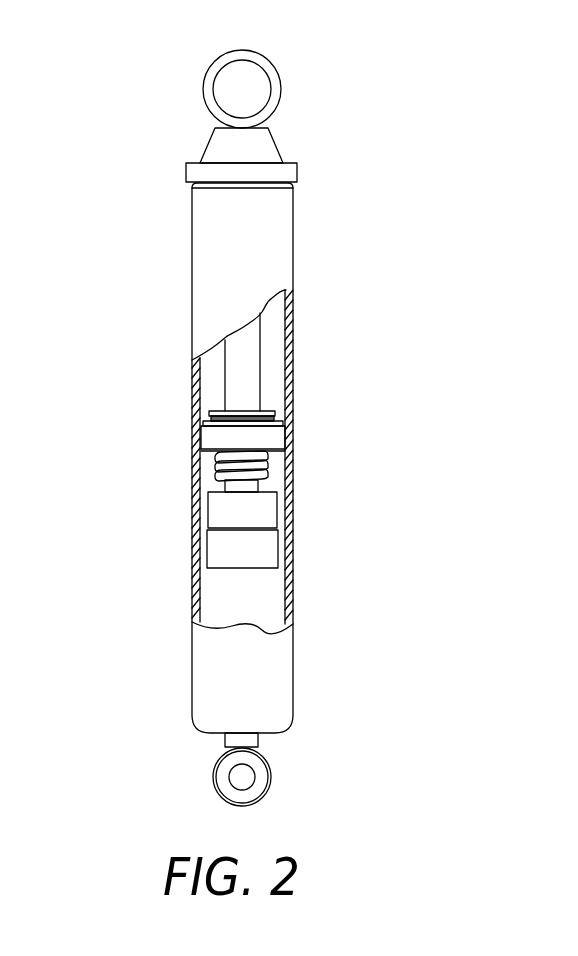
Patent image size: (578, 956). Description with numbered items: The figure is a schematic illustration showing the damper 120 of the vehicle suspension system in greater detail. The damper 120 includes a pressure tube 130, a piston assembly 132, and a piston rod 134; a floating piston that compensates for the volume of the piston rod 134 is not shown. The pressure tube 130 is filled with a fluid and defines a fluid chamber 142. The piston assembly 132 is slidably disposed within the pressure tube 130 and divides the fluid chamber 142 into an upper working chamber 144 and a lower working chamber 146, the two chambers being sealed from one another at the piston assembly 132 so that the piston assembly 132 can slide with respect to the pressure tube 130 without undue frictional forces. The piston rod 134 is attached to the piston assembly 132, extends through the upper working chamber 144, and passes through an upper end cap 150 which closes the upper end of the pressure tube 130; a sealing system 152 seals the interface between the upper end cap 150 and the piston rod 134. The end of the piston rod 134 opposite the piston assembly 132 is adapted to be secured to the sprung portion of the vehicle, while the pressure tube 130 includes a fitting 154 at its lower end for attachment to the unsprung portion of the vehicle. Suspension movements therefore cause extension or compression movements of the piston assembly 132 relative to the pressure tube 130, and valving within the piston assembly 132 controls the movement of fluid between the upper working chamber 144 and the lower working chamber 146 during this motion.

The damper 120 is at (436, 116).
The pressure tube 130 is at (293, 304).
The piston assembly 132 is at (268, 436).
The piston rod 134 is at (247, 383).
The fluid chamber 142 is at (270, 347).
The upper working chamber 144 is at (210, 388).
The lower working chamber 146 is at (270, 602).
The upper end cap 150 is at (206, 143).
The sealing system 152 is at (186, 172).
The fitting 154 is at (272, 776).